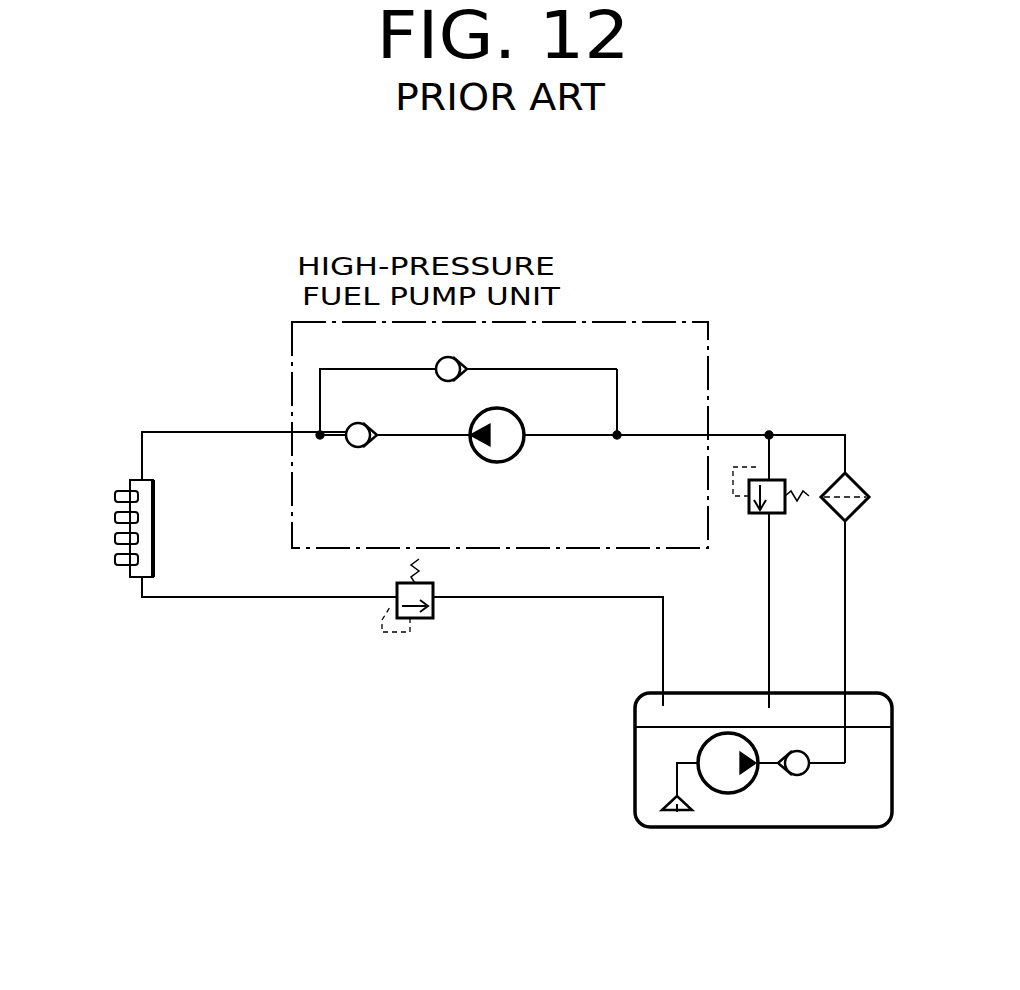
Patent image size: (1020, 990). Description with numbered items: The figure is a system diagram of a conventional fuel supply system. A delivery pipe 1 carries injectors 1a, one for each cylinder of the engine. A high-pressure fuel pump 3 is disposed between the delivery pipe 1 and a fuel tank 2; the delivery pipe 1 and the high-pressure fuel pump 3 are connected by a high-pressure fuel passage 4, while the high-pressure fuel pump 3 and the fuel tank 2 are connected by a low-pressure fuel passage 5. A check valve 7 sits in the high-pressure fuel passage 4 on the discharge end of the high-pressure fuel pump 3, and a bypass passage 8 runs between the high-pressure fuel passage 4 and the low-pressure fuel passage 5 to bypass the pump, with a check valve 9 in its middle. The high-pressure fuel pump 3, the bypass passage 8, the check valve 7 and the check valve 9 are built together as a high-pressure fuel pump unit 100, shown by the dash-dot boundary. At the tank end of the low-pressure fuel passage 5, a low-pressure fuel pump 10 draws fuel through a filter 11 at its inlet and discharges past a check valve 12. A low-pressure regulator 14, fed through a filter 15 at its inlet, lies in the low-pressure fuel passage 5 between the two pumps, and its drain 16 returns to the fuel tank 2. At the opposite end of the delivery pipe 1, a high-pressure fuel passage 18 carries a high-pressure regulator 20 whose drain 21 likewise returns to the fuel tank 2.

The high-pressure fuel pump unit 100 is at (708, 345).
The delivery pipe 1 is at (138, 578).
The injectors 1a is at (115, 558).
The fuel tank 2 is at (876, 693).
The high-pressure fuel pump 3 is at (522, 418).
The high-pressure fuel passage 4 is at (228, 432).
The low-pressure fuel passage 5 is at (740, 435).
The check valve 7 is at (368, 425).
The bypass passage 8 is at (617, 385).
The check valve 9 is at (460, 360).
The low-pressure fuel pump 10 is at (733, 793).
The filter 11 is at (677, 812).
The check valve 12 is at (802, 775).
The low-pressure regulator 14 is at (780, 513).
The filter 15 is at (862, 480).
The drain 16 is at (769, 630).
The high-pressure fuel passage 18 is at (298, 597).
The high-pressure regulator 20 is at (433, 590).
The drain 21 is at (580, 597).